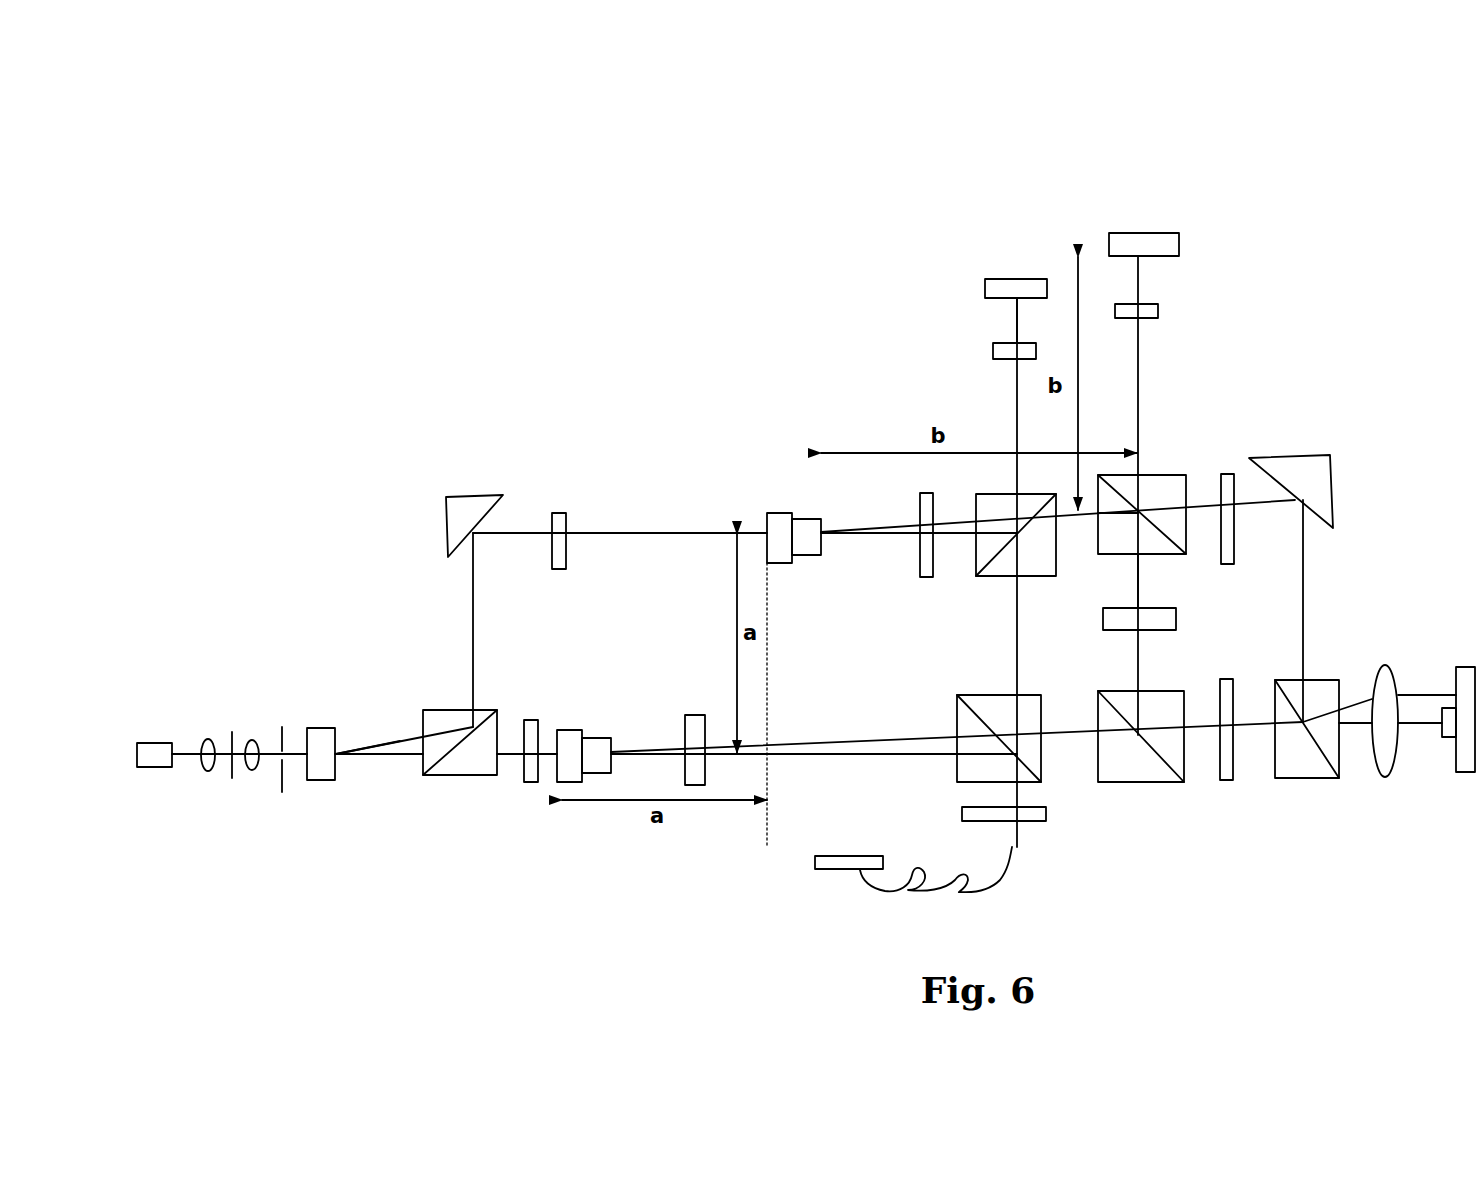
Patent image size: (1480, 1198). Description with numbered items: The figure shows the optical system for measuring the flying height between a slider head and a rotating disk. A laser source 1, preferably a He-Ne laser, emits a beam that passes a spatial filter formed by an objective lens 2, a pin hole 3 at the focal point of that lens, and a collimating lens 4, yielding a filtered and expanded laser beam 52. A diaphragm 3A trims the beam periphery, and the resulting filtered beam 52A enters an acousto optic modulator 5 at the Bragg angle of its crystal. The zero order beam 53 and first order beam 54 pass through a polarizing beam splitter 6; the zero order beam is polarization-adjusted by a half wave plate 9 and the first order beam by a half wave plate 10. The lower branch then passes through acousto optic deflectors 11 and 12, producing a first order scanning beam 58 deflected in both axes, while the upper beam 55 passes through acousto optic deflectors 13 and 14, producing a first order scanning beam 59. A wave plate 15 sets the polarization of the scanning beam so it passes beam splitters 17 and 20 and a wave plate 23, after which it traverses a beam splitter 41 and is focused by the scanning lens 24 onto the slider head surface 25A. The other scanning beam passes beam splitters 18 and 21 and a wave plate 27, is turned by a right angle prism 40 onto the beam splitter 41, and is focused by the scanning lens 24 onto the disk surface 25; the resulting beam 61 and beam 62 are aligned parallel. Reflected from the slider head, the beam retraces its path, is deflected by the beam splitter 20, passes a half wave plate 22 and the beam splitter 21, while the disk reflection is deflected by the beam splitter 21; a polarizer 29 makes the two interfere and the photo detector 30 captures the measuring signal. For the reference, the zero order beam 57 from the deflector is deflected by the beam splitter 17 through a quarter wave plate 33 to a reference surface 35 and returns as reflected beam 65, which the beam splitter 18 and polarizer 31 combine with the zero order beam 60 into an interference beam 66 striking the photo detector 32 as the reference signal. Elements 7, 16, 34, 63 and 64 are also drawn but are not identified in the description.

The laser source 1 is at (148, 768).
The objective lens 2 is at (208, 772).
The pin hole 3 is at (232, 730).
The collimating lens 4 is at (252, 738).
The acousto optic modulator 5 is at (331, 781).
The beam splitter 6 is at (440, 777).
The prism 7 is at (462, 495).
The wave plate 9 is at (531, 783).
The wave plate 10 is at (560, 570).
The acousto optic deflector 11 is at (568, 730).
The acousto optic deflector 12 is at (598, 738).
The acousto optic deflector 13 is at (775, 512).
The acousto optic deflector 14 is at (803, 520).
The wave plate 15 is at (696, 715).
The wave plate 16 is at (926, 578).
The beam splitter 17 is at (985, 695).
The beam splitter 18 is at (986, 576).
The beam splitter 20 is at (1175, 690).
The beam splitter 21 is at (1160, 473).
The wave plate 22 is at (1103, 618).
The wave plate 23 is at (1226, 678).
The scanning lens 24 is at (1385, 665).
The disk surface 25 is at (1468, 666).
The slider head surface 25A is at (1447, 750).
The wave plate 27 is at (1232, 473).
The polarizer 29 is at (1158, 312).
The photo detector 30 is at (1118, 232).
The polarizer 31 is at (993, 350).
The photo detector 32 is at (1005, 278).
The wave plate 33 is at (1037, 822).
The optical fiber 34 is at (960, 893).
The reference surface 35 is at (835, 870).
The right angle prism 40 is at (1305, 456).
The beam splitter 41 is at (1318, 680).
The laser beam 52 is at (256, 770).
The filtered beam 52A is at (290, 750).
The zero order beam 53 is at (377, 756).
The first order beam 54 is at (376, 745).
The beam 55 is at (640, 535).
The zero order beam 57 is at (805, 755).
The first order scanning beam 58 is at (810, 740).
The first order scanning beam 59 is at (855, 522).
The zero order beam 60 is at (866, 537).
The beam 61 is at (1415, 688).
The beam 62 is at (1415, 725).
The beam 63 is at (1139, 595).
The beam 64 is at (1140, 282).
The reflected beam 65 is at (1017, 628).
The interference beam 66 is at (1018, 326).
The diaphragm 3A is at (284, 793).